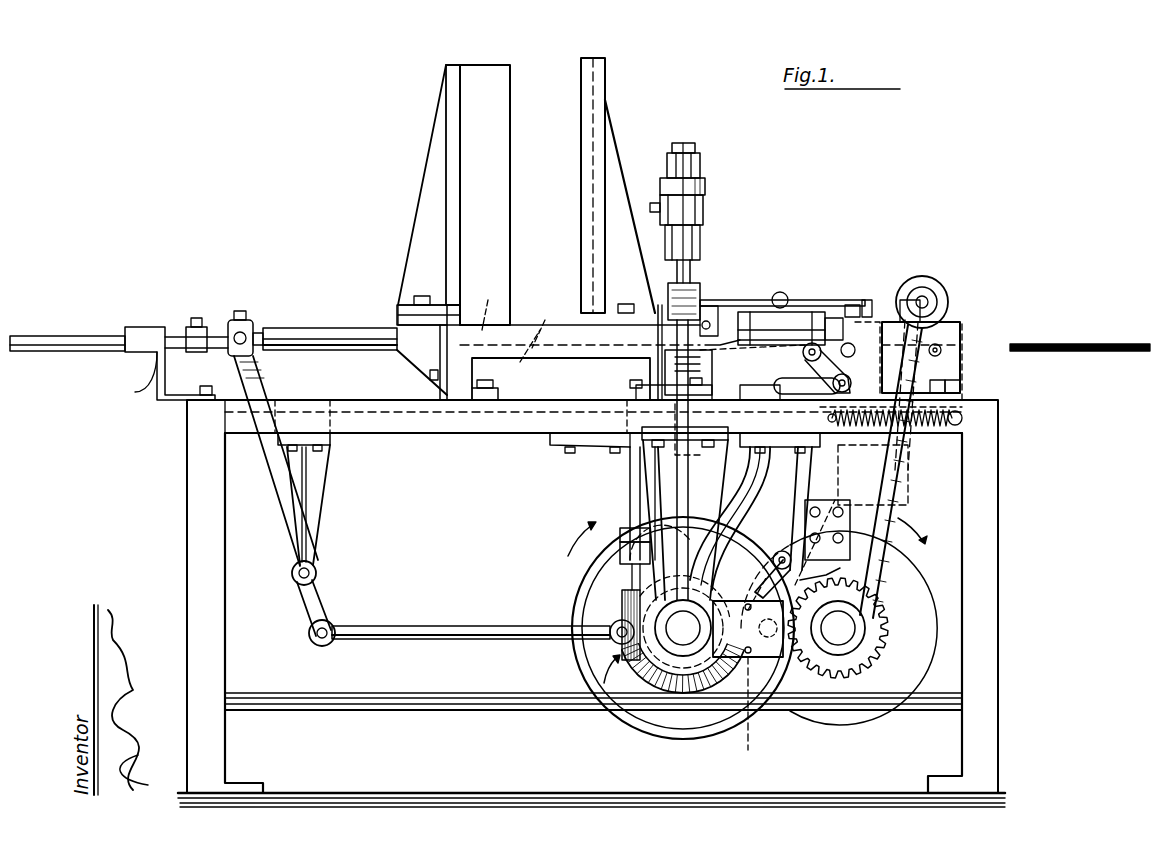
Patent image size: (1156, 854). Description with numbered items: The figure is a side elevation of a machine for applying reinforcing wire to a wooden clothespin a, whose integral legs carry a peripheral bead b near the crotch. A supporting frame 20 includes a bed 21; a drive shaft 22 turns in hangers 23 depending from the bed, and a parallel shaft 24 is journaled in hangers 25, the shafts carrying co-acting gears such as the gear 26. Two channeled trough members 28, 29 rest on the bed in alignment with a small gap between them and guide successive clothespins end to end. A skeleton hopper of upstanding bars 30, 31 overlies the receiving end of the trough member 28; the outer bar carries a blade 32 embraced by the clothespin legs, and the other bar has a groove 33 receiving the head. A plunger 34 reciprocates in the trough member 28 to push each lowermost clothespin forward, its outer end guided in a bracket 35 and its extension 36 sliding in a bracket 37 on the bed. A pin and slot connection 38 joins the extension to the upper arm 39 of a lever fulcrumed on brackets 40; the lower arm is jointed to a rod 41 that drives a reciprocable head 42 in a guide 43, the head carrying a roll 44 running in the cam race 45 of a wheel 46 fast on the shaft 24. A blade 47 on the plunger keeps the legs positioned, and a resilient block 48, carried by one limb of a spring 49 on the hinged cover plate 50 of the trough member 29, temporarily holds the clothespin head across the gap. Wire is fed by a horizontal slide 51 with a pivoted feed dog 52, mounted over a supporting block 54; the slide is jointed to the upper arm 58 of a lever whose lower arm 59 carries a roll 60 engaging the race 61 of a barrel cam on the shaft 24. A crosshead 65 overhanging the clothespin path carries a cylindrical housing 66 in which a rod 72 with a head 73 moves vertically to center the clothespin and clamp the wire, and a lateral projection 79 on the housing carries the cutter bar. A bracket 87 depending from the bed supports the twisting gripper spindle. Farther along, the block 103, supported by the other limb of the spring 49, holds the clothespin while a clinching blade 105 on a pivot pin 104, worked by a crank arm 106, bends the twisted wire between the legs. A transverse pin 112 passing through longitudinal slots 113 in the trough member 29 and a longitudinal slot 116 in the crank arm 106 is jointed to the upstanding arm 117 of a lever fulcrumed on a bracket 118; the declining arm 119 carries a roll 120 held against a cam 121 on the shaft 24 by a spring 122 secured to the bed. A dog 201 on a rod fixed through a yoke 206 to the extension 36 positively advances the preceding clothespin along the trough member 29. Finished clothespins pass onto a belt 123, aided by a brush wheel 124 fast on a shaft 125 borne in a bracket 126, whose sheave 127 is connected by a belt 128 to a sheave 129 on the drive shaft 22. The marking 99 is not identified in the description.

The supporting frame 20 is at (187, 572).
The bed 21 is at (462, 425).
The drive shaft 22 is at (838, 628).
The hangers 23 is at (860, 457).
The shaft 24 is at (670, 640).
The hangers 25 is at (640, 467).
The gear 26 is at (862, 672).
The trough member 28 is at (568, 352).
The trough member 29 is at (948, 322).
The hopper bar 30 is at (450, 87).
The hopper bar 31 is at (606, 90).
The blade 32 is at (473, 111).
The groove 33 is at (588, 63).
The plunger 34 is at (316, 326).
The bracket 35 is at (410, 360).
The extension 36 is at (88, 334).
The bracket 37 is at (145, 327).
The pin and slot connection 38 is at (243, 322).
The upper arm 39 is at (265, 465).
The brackets 40 is at (318, 483).
The rod 41 is at (440, 627).
The reciprocable head 42 is at (762, 660).
The guide 43 is at (722, 672).
The stud or roll 44 is at (838, 628).
The cam race 45 is at (690, 658).
The wheel 46 is at (606, 700).
The blade 47 is at (488, 306).
The resilient block 48 is at (735, 300).
The spring 49 is at (784, 294).
The hinged cover plate 50 is at (760, 312).
The slide 51 is at (660, 350).
The feed dog 52 is at (670, 290).
The supporting block 54 is at (660, 385).
The upper arm 58 is at (656, 493).
The lower arm 59 is at (624, 575).
The stud or roll 60 is at (620, 600).
The cam race 61 is at (608, 640).
The crosshead 65 is at (706, 182).
The cylindrical housing 66 is at (700, 158).
The rod 72 is at (678, 283).
The head 73 is at (690, 146).
The lateral projection 79 is at (704, 202).
The bracket 87 is at (640, 478).
The direction arrow 99 is at (580, 674).
The under-grooved block 103 is at (868, 300).
The pivot pin 104 is at (815, 340).
The blade 105 is at (800, 353).
The crank arm 106 is at (863, 358).
The transverse pin 112 is at (925, 350).
The longitudinal slots 113 is at (790, 385).
The longitudinal slot 116 is at (760, 385).
The upstanding arm 117 is at (810, 474).
The bracket 118 is at (850, 504).
The arm 119 is at (866, 578).
The roll 120 is at (754, 715).
The cam 121 is at (648, 540).
The spring 122 is at (950, 412).
The belt 123 is at (1090, 351).
The brush wheel 124 is at (940, 283).
The shaft 125 is at (926, 302).
The bracket 126 is at (950, 358).
The sheave 127 is at (935, 292).
The belt 128 is at (888, 488).
The sheave 129 is at (860, 628).
The dog 201 is at (706, 306).
The yoke 206 is at (190, 350).
The clothespin a is at (541, 319).
The peripheral bead b is at (523, 359).